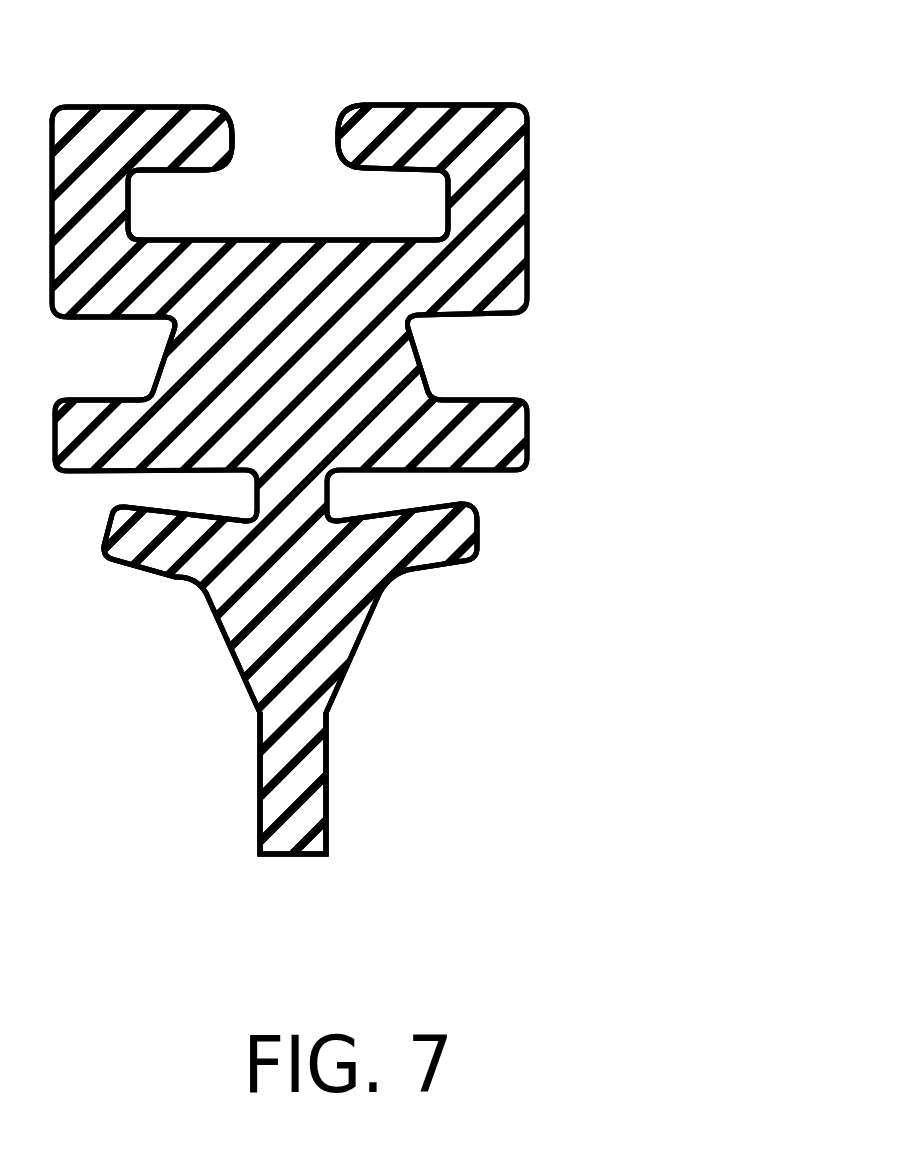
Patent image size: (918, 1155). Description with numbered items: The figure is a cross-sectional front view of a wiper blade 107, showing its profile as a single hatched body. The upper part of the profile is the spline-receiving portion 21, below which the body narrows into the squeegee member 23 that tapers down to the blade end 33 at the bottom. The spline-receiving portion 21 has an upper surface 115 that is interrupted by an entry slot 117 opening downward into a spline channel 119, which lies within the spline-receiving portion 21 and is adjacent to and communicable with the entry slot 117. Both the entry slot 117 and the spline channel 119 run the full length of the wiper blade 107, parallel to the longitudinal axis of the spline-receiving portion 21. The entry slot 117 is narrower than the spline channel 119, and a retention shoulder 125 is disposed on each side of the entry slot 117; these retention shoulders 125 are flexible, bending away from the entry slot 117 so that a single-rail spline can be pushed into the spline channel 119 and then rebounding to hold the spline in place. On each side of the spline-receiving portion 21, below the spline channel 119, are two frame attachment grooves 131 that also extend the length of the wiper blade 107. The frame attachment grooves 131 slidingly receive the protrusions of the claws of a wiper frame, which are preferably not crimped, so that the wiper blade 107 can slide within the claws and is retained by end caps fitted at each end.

The spline-receiving portion 21 is at (585, 140).
The wiper blade 107 is at (636, 310).
The upper surface 115 is at (128, 105).
The entry slot 117 is at (282, 118).
The retention shoulder 125 is at (428, 105).
The spline channel 119 is at (318, 220).
The frame attachment grooves 131 is at (127, 380).
The squeegee member 23 is at (427, 600).
The blade end 33 is at (293, 856).